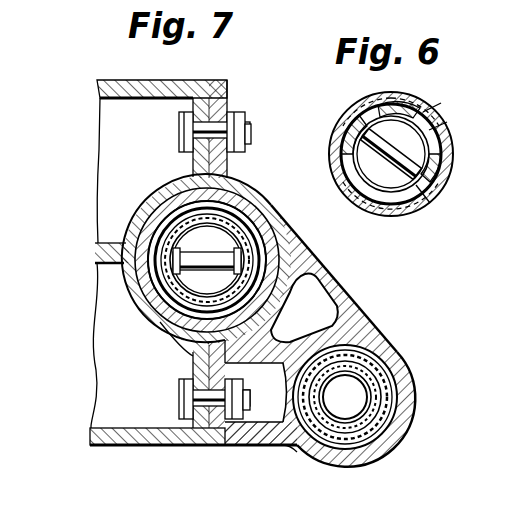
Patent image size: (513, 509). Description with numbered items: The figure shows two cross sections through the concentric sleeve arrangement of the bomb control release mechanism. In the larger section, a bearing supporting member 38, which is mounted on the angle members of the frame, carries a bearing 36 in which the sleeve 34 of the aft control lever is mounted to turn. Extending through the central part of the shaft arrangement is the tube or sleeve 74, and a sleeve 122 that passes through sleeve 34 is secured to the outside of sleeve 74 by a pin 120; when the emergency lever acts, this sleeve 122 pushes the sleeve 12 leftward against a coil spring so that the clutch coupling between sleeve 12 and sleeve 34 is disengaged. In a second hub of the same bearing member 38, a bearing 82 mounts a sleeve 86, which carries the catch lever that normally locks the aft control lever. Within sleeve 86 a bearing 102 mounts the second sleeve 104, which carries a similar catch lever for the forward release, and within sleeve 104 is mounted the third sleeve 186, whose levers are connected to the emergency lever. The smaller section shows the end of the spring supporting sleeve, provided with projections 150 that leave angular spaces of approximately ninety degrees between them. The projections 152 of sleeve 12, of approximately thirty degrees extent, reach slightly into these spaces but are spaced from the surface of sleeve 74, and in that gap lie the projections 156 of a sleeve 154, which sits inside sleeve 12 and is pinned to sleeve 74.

In FIG. 7, the bearing supporting member 38 is at (163, 97).
In FIG. 7, the pin 120 is at (180, 250).
In FIG. 7, the tube or sleeve 74 is at (185, 318).
In FIG. 6, the tube or sleeve 74 is at (440, 124).
In FIG. 7, the bearing 36 is at (268, 232).
In FIG. 7, the sleeve 34 is at (262, 265).
In FIG. 7, the sleeve 122 is at (165, 290).
In FIG. 7, the bearing 82 is at (392, 362).
In FIG. 7, the sleeve 86 is at (413, 397).
In FIG. 7, the bearing 102 is at (373, 413).
In FIG. 7, the second sleeve 104 is at (345, 425).
In FIG. 7, the third sleeve 186 is at (306, 447).
In FIG. 6, the sleeve 12 is at (449, 144).
In FIG. 6, the projections 152 is at (447, 165).
In FIG. 6, the projections 156 is at (440, 186).
In FIG. 6, the sleeve 154 is at (350, 158).
In FIG. 6, the projections 150 is at (405, 207).